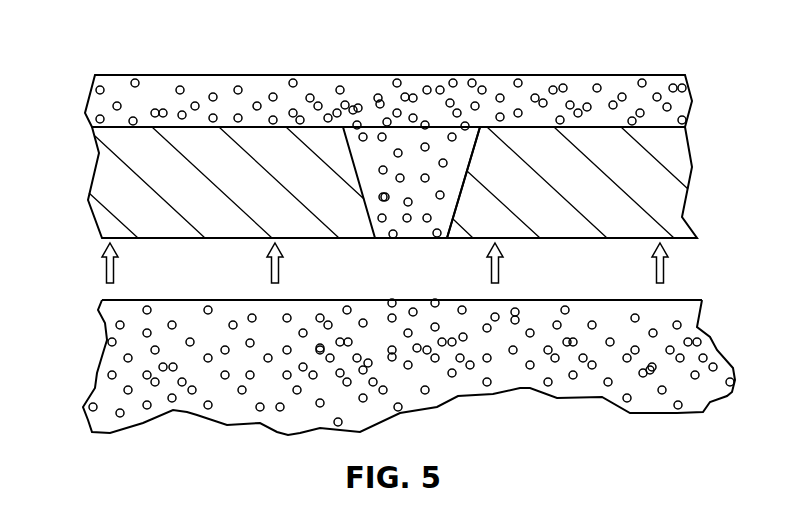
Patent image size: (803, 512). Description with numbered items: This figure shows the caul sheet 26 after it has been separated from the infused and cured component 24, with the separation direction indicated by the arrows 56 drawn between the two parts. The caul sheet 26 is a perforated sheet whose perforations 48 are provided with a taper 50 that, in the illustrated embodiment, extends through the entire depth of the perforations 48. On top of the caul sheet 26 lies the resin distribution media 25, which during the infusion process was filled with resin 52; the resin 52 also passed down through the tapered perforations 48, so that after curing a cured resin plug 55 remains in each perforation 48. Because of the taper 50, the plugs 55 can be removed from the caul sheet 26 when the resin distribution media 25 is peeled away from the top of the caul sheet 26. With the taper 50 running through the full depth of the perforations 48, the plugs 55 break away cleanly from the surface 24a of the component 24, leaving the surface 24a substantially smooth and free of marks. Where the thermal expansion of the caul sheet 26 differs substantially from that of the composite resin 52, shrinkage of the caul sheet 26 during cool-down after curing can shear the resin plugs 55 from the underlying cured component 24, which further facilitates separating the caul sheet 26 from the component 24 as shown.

The cured component 24 is at (113, 393).
The surface 24a is at (519, 297).
The resin distribution media 25 is at (158, 89).
The caul sheet 26 is at (605, 140).
The perforations 48 is at (377, 130).
The taper 50 is at (456, 131).
The resin 52 is at (380, 197).
The cured resin plug 55 is at (404, 152).
The arrows 56 is at (105, 265).